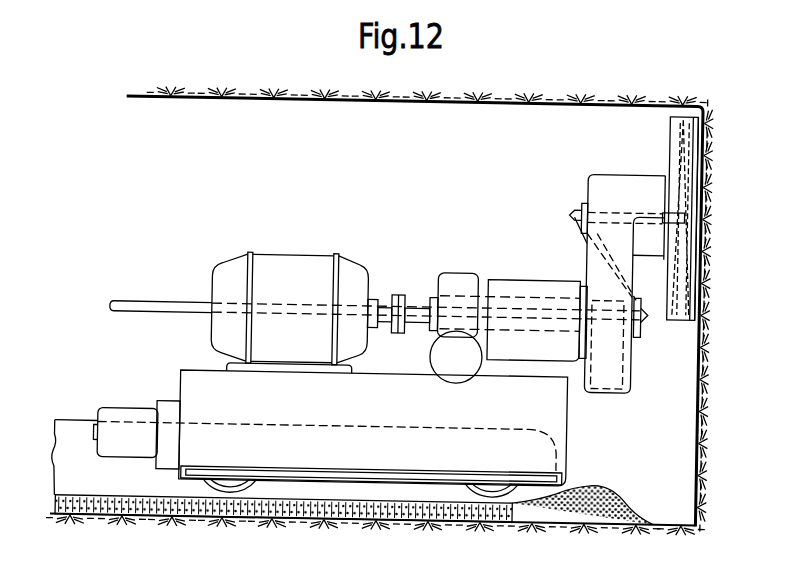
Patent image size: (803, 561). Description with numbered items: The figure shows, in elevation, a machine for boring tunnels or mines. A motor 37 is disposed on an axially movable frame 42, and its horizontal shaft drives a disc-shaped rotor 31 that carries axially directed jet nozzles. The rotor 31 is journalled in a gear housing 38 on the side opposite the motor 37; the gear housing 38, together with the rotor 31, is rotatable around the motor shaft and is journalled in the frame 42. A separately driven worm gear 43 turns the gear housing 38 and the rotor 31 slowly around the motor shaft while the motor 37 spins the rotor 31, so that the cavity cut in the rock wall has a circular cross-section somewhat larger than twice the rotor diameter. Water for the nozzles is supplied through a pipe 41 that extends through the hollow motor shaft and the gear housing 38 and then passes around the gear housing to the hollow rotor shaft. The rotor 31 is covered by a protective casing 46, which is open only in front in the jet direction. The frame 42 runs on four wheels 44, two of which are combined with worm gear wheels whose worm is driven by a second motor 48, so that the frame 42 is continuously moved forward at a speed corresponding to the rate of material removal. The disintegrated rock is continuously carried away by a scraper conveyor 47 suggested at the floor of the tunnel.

The disc-shaped rotor 31 is at (689, 318).
The motor 37 is at (282, 272).
The gear housing 38 is at (589, 267).
The pipe 41 is at (135, 311).
The frame 42 is at (243, 453).
The worm gear 43 is at (465, 284).
The wheels 44 is at (495, 485).
The protective casing 46 is at (682, 128).
The scraper conveyor 47 is at (110, 488).
The motor 48 is at (133, 437).